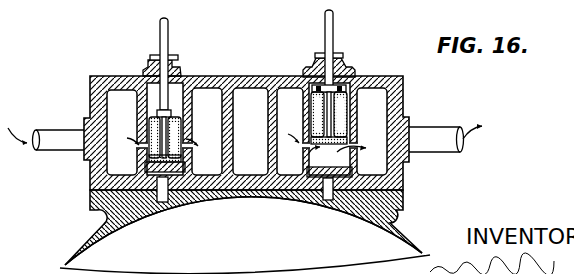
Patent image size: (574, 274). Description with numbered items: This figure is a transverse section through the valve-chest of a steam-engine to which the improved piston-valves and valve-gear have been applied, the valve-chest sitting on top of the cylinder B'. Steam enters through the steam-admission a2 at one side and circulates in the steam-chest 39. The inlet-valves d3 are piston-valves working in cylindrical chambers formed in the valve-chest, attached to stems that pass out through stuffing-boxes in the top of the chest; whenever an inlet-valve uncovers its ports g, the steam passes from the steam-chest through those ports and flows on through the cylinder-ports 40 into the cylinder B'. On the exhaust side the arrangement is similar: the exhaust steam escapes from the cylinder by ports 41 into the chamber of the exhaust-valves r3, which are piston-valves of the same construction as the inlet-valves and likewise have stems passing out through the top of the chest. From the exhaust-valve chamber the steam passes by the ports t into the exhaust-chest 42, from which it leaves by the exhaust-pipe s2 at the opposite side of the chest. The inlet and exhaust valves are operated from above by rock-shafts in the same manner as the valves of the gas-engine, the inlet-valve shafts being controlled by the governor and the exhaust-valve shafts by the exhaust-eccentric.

The steam-chest 39 is at (196, 143).
The cylinder-ports 40 is at (163, 203).
The exhaust ports 41 is at (332, 188).
The exhaust-chest 42 is at (372, 131).
The steam-admission a2 is at (46, 149).
The exhaust-pipe s2 is at (445, 147).
The inlet-valves d3 is at (176, 95).
The exhaust-valves r3 is at (336, 93).
The ports t is at (360, 142).
The ports g is at (133, 154).
The cylinder B' is at (245, 235).